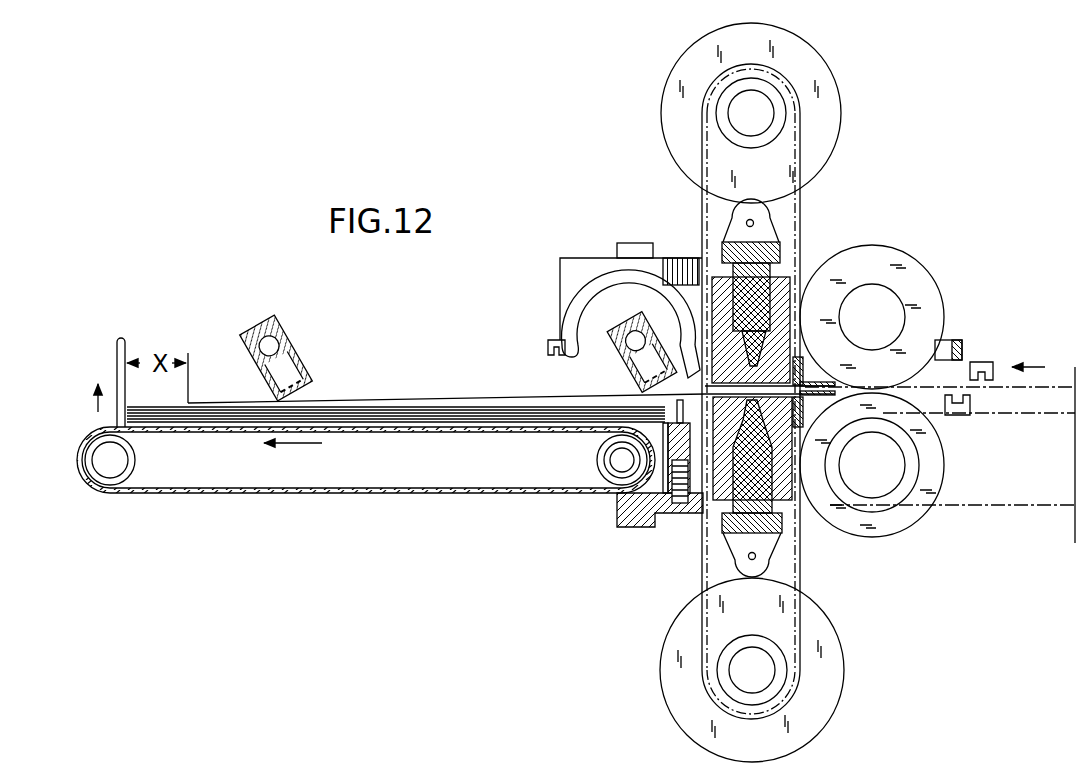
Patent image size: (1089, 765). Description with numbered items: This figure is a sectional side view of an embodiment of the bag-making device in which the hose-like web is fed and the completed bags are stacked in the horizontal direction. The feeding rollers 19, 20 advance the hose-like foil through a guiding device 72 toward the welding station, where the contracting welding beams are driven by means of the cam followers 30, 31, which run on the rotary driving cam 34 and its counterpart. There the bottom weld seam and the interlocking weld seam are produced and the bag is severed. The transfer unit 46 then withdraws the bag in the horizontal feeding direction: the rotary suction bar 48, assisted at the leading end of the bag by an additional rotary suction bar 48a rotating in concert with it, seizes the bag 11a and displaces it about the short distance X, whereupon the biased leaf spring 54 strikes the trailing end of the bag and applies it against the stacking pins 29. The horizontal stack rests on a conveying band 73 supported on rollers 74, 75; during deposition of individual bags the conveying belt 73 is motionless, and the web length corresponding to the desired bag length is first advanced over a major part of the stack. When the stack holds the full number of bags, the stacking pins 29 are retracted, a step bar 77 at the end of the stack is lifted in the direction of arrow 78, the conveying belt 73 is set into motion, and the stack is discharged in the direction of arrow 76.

The rotary driving cam 34 is at (815, 85).
The leaf spring 54 is at (727, 365).
The cam follower 30 is at (777, 252).
The cam follower 31 is at (780, 522).
The guiding device 72 is at (815, 385).
The transfer unit 46 is at (573, 242).
The rotary suction bar 48 is at (613, 330).
The additional rotary suction bar 48a is at (270, 332).
The feeding roller 19 is at (913, 282).
The feeding roller 20 is at (913, 513).
The conveying band 73 is at (433, 495).
The roller 75 is at (108, 468).
The roller 74 is at (608, 477).
The stacking pin 29 is at (620, 442).
The bag 11a is at (368, 404).
The step bar 77 is at (118, 345).
The arrow 78 is at (97, 408).
The arrow 76 is at (298, 445).